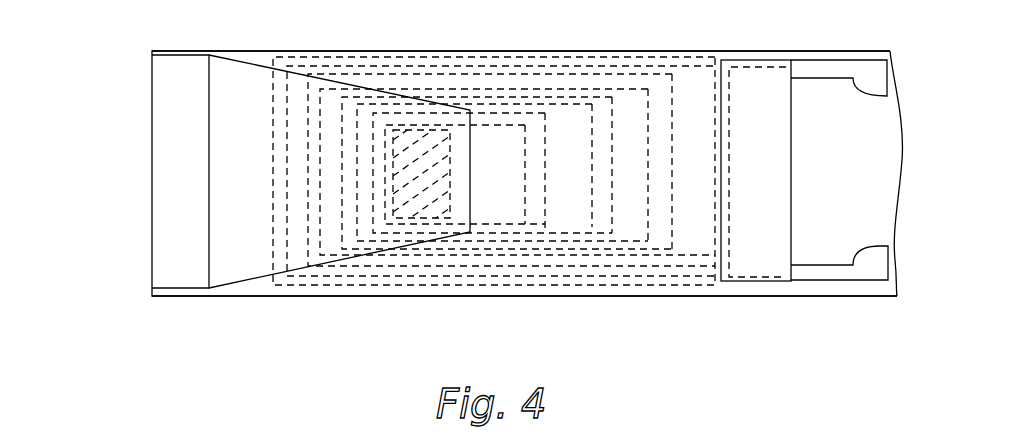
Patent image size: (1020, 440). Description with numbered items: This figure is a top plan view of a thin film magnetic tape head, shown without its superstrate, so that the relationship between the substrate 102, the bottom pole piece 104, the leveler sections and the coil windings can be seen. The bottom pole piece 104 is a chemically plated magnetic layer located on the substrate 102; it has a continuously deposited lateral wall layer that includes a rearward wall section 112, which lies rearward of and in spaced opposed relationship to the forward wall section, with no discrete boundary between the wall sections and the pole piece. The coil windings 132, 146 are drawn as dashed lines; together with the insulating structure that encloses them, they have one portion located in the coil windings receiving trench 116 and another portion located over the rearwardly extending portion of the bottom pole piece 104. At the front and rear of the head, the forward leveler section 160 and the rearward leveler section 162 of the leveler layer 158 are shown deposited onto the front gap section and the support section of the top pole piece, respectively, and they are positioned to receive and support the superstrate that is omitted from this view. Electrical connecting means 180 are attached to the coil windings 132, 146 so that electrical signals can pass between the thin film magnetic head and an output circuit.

The substrate 102 is at (182, 50).
The bottom pole piece layer 104 is at (247, 288).
The rearward wall section 112 is at (422, 134).
The coil windings receiving trench 116 is at (331, 130).
The coil winding 132 is at (494, 217).
The coil winding 146 is at (660, 238).
The leveler layer 158 is at (178, 87).
The forward leveler section 160 is at (168, 260).
The rearward leveler section 162 is at (780, 85).
The electrical connecting means 180 is at (840, 72).